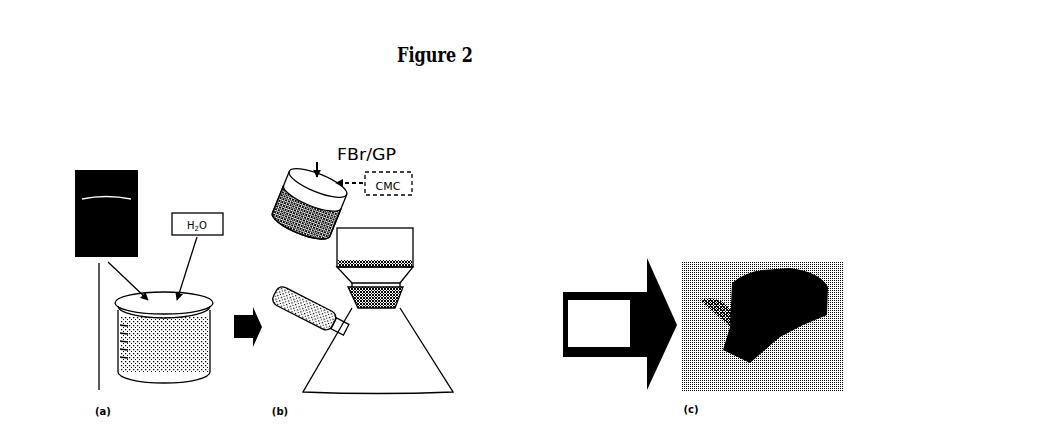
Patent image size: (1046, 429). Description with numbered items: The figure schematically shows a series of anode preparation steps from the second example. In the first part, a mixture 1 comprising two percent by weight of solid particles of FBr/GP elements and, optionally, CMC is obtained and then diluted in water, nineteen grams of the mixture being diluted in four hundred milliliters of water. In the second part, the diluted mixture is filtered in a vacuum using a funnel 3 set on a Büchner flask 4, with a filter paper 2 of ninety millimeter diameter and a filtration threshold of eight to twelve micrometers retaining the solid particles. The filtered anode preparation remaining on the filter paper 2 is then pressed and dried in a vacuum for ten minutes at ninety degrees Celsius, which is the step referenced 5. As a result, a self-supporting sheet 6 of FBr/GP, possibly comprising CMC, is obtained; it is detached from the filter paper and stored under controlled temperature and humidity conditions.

The mixture 1 is at (113, 147).
The filter paper 2 is at (382, 261).
The funnel 3 is at (411, 276).
The Büchner flask 4 is at (405, 358).
The pressing and drying step 5 is at (620, 324).
The self-supporting sheet 6 is at (796, 249).